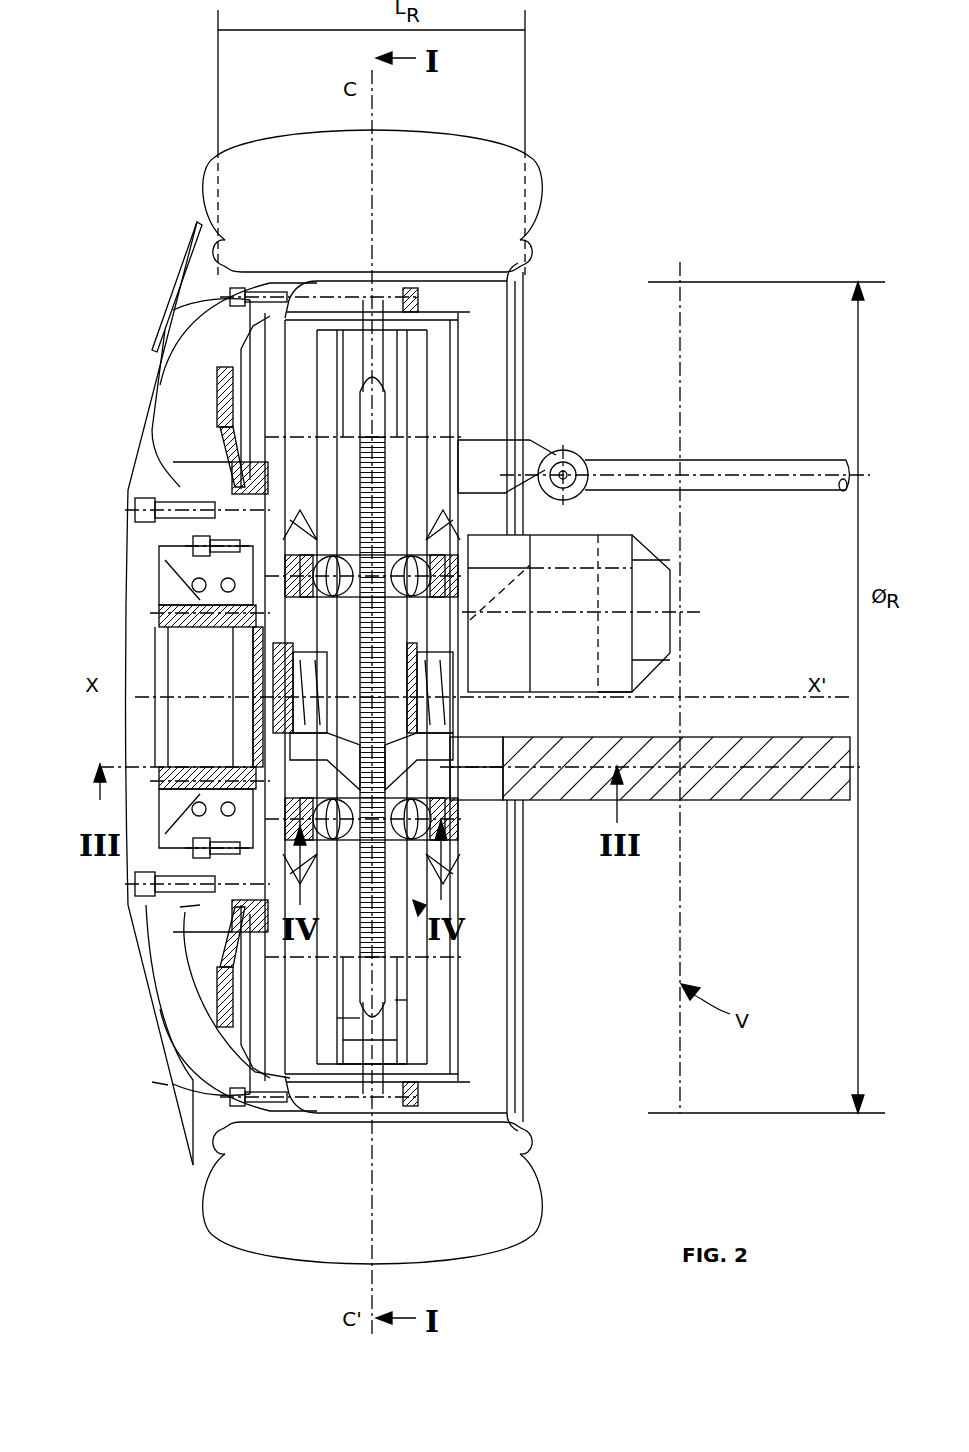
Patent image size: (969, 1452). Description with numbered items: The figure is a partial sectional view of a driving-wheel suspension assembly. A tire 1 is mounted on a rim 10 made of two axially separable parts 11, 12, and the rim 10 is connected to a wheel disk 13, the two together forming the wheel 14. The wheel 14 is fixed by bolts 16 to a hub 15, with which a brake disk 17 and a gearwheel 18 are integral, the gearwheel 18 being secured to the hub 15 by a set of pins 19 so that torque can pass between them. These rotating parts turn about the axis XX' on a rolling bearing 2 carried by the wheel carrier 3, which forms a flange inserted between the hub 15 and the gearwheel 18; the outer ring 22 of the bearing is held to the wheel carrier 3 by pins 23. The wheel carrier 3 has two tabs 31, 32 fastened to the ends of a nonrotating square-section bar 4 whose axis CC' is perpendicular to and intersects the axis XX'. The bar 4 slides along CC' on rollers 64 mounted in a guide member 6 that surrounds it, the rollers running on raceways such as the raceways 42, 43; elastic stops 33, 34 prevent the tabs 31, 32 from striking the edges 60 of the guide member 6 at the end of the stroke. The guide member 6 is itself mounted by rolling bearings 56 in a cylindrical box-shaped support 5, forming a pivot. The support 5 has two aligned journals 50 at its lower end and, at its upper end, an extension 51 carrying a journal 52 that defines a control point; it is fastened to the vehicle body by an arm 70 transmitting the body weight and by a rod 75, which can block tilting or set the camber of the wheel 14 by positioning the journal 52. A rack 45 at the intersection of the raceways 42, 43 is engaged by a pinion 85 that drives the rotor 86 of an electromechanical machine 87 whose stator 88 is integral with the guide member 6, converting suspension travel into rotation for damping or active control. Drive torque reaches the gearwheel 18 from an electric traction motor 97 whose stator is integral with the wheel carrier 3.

The tire 1 is at (485, 150).
The rolling bearing 2 is at (185, 810).
The wheel carrier 3 is at (230, 947).
The bar 4 is at (395, 965).
The support 5 is at (467, 717).
The guide member 6 is at (470, 590).
The rim 10 is at (560, 222).
The rim part 11 is at (520, 262).
The rim part 12 is at (205, 255).
The wheel disk 13 is at (148, 382).
The wheel 14 is at (125, 345).
The hub 15 is at (160, 590).
The bolts 16 is at (140, 505).
The brake disk 17 is at (227, 367).
The gearwheel 18 is at (250, 468).
The pins 19 is at (165, 607).
The outer ring 22 is at (185, 580).
The pins 23 is at (205, 565).
The tab 31 is at (330, 290).
The tab 32 is at (335, 1098).
The stop 33 is at (450, 315).
The stop 34 is at (430, 1070).
The raceway 42 is at (410, 998).
The raceway 43 is at (362, 1018).
The rack 45 is at (400, 430).
The journals 50 is at (360, 742).
The extension 51 is at (530, 457).
The journal 52 is at (577, 462).
The rolling bearings 56 is at (300, 680).
The edges 60 is at (400, 965).
The rollers 64 is at (400, 468).
The arm 70 is at (750, 792).
The rod 75 is at (760, 462).
The pinion 85 is at (470, 640).
The rotor 86 is at (470, 625).
The electromechanical machine 87 is at (660, 556).
The stator 88 is at (650, 605).
The electric motor 97 is at (483, 447).